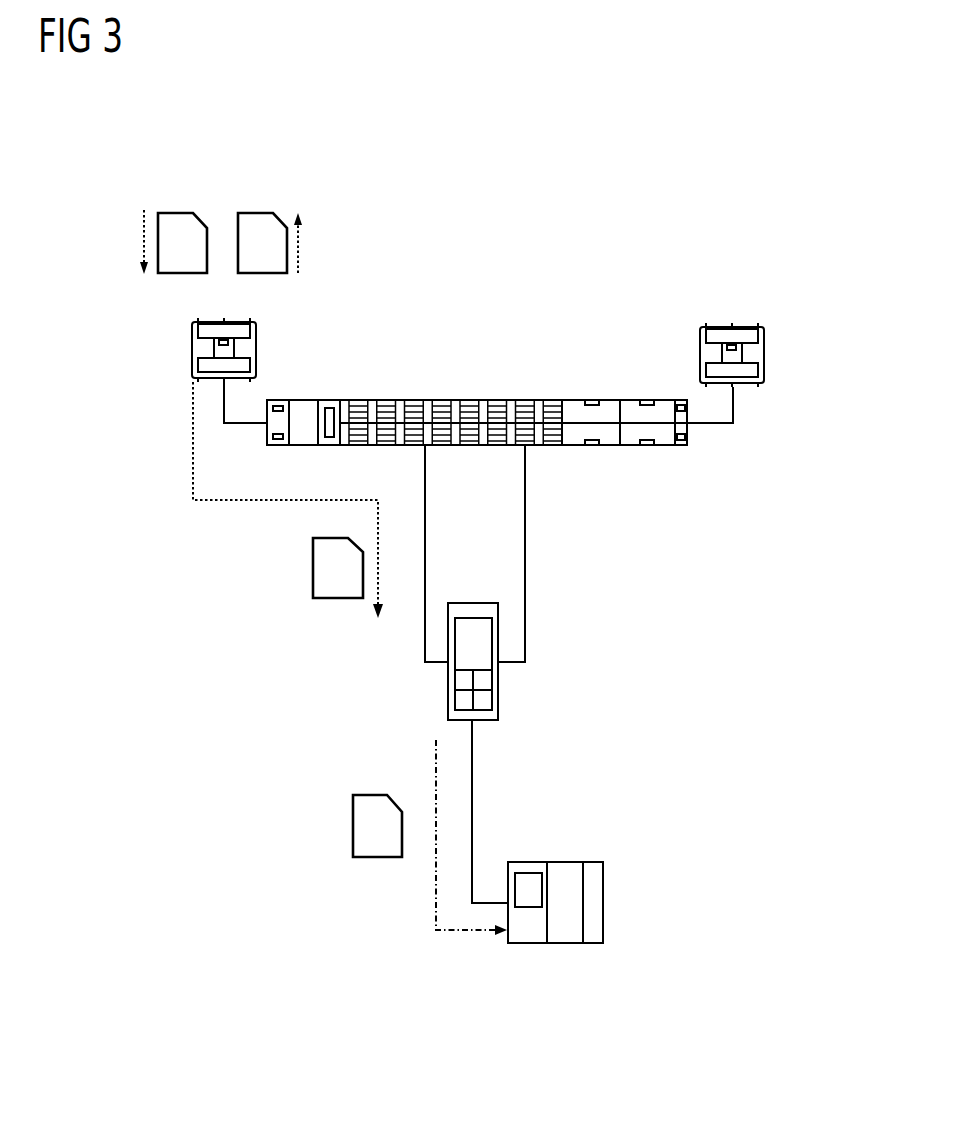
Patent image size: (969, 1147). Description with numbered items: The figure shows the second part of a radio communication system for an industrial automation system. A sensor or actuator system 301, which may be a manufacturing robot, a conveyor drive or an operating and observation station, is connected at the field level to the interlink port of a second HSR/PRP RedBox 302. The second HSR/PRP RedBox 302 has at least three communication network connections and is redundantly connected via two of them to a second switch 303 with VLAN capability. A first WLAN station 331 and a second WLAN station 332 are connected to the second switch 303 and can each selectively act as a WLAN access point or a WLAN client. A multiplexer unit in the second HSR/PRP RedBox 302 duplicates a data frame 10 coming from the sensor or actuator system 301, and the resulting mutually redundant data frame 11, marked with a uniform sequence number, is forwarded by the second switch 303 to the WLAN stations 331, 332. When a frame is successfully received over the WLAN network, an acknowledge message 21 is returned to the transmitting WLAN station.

The data frame 10 is at (380, 857).
The redundant data frame 11 is at (178, 213).
The acknowledge message 21 is at (258, 213).
The sensor or actuator system 301 is at (603, 908).
The second HSR/PRP RedBox 302 is at (498, 695).
The second switch 303 is at (573, 400).
The first WLAN station 331 is at (256, 347).
The second WLAN station 332 is at (765, 350).